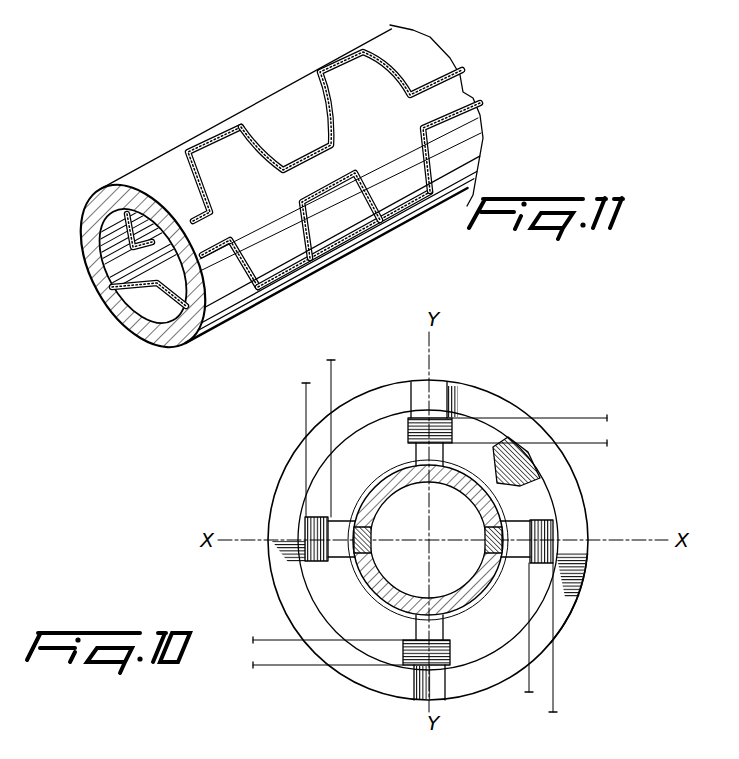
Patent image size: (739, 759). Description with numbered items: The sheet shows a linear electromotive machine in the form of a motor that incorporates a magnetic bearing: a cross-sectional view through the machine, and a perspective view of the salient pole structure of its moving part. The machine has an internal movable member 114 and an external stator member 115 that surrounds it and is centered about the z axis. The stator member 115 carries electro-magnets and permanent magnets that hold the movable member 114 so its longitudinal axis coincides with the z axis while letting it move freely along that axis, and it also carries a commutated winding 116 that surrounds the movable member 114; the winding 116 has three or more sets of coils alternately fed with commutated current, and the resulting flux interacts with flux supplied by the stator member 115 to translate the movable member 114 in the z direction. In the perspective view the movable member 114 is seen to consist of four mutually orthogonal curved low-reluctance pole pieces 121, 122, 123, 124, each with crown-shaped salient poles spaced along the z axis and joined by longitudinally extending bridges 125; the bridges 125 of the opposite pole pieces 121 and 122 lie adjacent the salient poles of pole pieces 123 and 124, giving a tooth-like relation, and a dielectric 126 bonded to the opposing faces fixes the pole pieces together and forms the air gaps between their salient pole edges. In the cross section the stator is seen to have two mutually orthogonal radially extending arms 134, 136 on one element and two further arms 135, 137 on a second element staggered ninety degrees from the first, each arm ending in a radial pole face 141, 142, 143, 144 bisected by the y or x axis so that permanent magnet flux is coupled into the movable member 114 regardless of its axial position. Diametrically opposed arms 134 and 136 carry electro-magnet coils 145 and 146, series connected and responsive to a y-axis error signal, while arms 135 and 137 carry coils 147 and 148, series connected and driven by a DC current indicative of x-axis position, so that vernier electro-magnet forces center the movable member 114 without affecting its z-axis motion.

In FIG. 11, the internal movable member 114 is at (286, 80).
In FIG. 10, the internal movable member 114 is at (512, 498).
In FIG. 10, the external stator member 115 is at (572, 630).
In FIG. 10, the commutated winding 116 is at (532, 468).
In FIG. 11, the pole piece 121 is at (340, 231).
In FIG. 10, the pole piece 121 is at (458, 604).
In FIG. 11, the pole piece 122 is at (88, 206).
In FIG. 10, the pole piece 122 is at (384, 483).
In FIG. 11, the pole piece 123 is at (248, 163).
In FIG. 11, the pole piece 124 is at (100, 305).
In FIG. 11, the bridges 125 is at (288, 287).
In FIG. 10, the bridges 125 is at (347, 556).
In FIG. 11, the dielectric 126 is at (190, 217).
In FIG. 10, the dielectric 126 is at (490, 480).
In FIG. 10, the radially extending arm 134 is at (442, 384).
In FIG. 10, the radially extending arm 135 is at (280, 546).
In FIG. 10, the radially extending arm 136 is at (416, 679).
In FIG. 10, the radially extending arm 137 is at (574, 549).
In FIG. 10, the radial pole face 141 is at (452, 416).
In FIG. 10, the radial pole face 142 is at (455, 668).
In FIG. 10, the radial pole face 143 is at (305, 522).
In FIG. 10, the radial pole face 144 is at (548, 522).
In FIG. 10, the electro-magnet coil 145 is at (436, 392).
In FIG. 10, the electro-magnet coil 146 is at (406, 657).
In FIG. 10, the electro-magnet coil 147 is at (305, 534).
In FIG. 10, the electro-magnet coil 148 is at (580, 594).